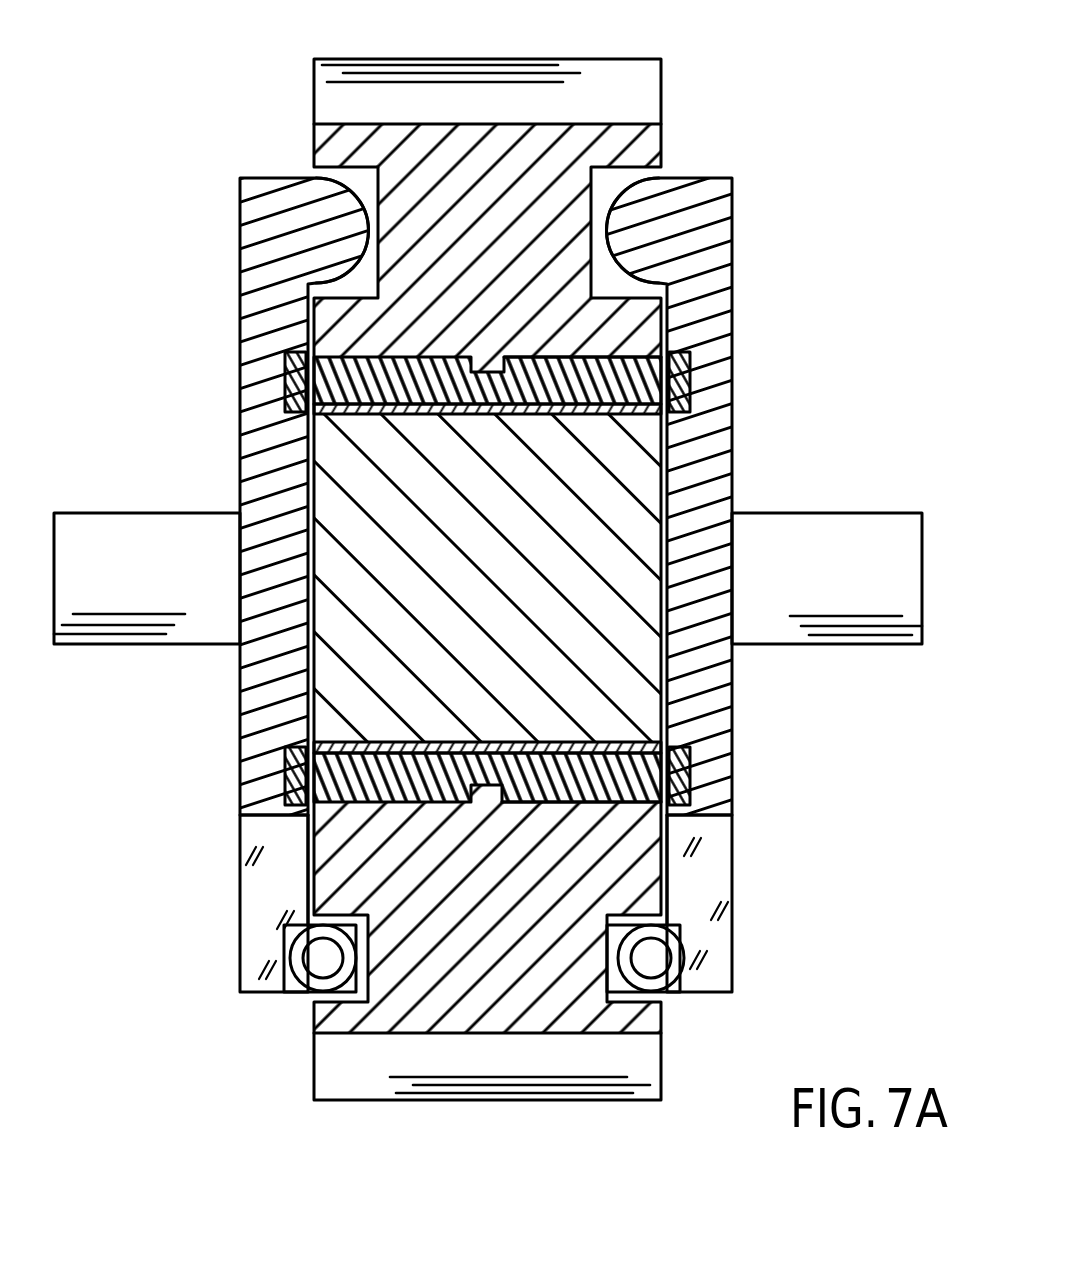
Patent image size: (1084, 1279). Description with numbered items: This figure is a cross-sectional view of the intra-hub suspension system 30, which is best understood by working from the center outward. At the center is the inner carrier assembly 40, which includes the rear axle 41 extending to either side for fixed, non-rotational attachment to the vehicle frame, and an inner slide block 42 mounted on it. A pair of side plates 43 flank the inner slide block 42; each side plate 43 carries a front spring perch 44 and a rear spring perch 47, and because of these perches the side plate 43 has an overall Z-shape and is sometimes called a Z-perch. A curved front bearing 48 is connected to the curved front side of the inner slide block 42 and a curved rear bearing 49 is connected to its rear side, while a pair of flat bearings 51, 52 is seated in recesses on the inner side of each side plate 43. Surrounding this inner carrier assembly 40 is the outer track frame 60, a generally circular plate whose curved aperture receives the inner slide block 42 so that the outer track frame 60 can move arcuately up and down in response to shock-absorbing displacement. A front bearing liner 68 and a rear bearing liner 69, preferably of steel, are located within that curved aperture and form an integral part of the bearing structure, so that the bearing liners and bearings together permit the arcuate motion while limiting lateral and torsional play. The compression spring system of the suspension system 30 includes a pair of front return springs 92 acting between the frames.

The intra-hub suspension system 30 is at (832, 212).
The inner carrier assembly 40 is at (409, 683).
The rear axle 41 is at (839, 533).
The inner slide block 42 is at (363, 645).
The side plate 43 is at (241, 500).
The front spring perch 44 is at (273, 982).
The rear spring perch 47 is at (336, 209).
The curved front bearing 48 is at (625, 748).
The curved rear bearing 49 is at (570, 414).
The flat bearing 51 is at (283, 389).
The flat bearing 52 is at (283, 784).
The outer track frame 60 is at (511, 208).
The front bearing liner 68 is at (632, 788).
The rear bearing liner 69 is at (618, 370).
The front return spring 92 is at (302, 975).